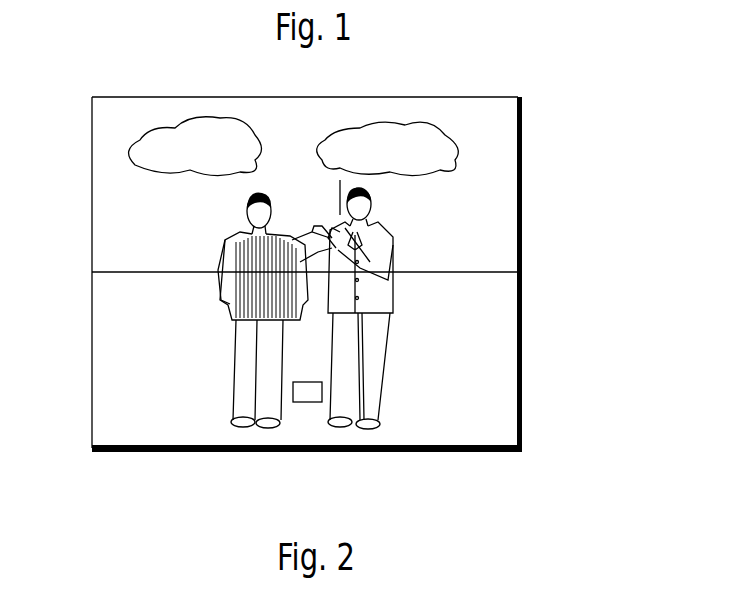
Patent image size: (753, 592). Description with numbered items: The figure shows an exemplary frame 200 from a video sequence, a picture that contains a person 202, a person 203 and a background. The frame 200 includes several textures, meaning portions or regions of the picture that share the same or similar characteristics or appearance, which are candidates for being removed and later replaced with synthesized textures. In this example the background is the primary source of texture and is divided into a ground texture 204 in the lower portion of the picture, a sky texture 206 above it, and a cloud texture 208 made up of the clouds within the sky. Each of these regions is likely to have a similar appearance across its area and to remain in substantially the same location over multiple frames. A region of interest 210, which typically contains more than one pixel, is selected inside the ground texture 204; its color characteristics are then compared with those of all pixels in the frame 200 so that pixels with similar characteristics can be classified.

The frame 200 is at (562, 148).
The person 202 is at (238, 305).
The person 203 is at (378, 302).
The ground texture 204 is at (440, 427).
The sky texture 206 is at (491, 208).
The cloud texture 208 is at (188, 133).
The region of interest (ROI) 210 is at (309, 402).